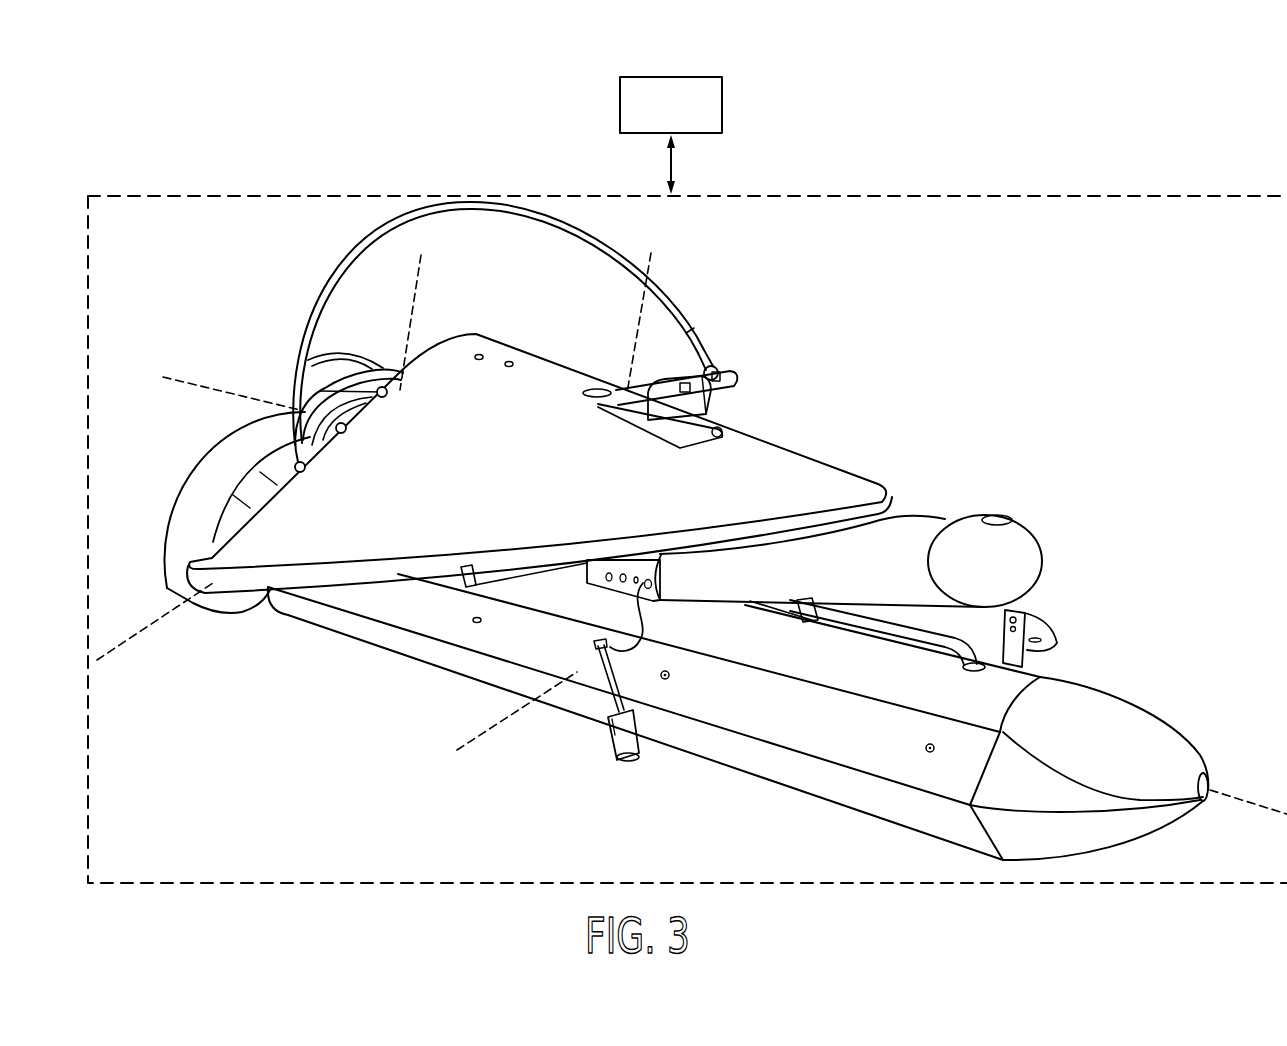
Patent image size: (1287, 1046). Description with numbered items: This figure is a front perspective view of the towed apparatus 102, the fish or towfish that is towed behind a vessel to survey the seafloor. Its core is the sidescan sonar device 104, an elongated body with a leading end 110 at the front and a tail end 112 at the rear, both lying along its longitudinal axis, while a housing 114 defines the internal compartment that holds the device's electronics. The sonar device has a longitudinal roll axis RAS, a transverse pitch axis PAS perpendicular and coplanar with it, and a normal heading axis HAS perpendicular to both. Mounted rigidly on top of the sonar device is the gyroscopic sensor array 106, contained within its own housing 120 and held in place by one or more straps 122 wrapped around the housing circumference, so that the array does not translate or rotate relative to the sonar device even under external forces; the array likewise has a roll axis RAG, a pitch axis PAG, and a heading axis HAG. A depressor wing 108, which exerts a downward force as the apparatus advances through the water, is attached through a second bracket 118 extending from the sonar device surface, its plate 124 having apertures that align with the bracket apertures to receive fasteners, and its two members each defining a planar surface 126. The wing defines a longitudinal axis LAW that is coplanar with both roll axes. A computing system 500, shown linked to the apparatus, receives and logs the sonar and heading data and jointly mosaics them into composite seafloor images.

The towed apparatus 102 is at (188, 120).
The sidescan sonar device 104 is at (1093, 665).
The gyroscopic sensor array 106 is at (330, 375).
The depressor wing 108 is at (754, 424).
The leading end 110 is at (1204, 745).
The tail end 112 is at (186, 460).
The housing 114 is at (760, 652).
The second bracket 118 is at (601, 572).
The housing 120 is at (295, 403).
The straps 122 is at (298, 440).
The plate 124 is at (652, 558).
The planar surface 126 is at (572, 493).
The computing system 500 is at (685, 119).
The heading axis of the sidescan sonar device HAS is at (651, 256).
The heading axis of the gyroscopic sensor array HAG is at (405, 325).
The roll axis of the gyroscopic sensor array RAG is at (207, 387).
The pitch axis of the gyroscopic sensor array PAG is at (160, 620).
The pitch axis of the sidescan sonar device PAS is at (514, 716).
The roll axis of the sidescan sonar device RAS is at (1243, 794).
The longitudinal axis of the depressor wing LAW is at (990, 538).